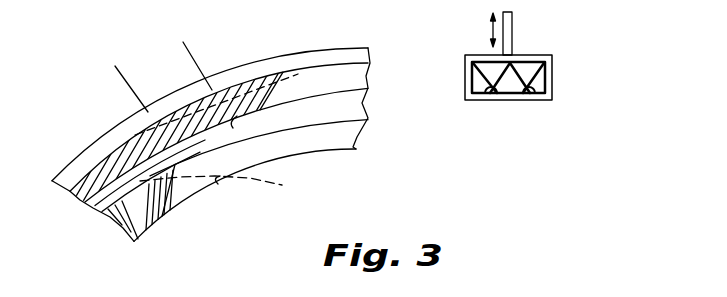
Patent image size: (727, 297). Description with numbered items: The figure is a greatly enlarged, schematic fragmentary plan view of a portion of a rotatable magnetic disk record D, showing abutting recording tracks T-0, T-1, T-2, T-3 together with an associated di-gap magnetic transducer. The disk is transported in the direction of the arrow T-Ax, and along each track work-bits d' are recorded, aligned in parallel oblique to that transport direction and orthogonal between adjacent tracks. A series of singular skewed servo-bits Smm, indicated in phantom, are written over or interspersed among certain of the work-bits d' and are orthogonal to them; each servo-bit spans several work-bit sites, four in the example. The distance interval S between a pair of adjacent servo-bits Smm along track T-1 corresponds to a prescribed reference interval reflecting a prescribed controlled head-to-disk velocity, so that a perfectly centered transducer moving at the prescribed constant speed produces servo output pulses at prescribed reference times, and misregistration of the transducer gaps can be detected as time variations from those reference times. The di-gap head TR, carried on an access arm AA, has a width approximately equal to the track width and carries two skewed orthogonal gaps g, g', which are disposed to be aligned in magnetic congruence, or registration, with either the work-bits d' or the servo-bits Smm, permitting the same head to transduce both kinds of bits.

The tread surface layer T-0 is at (372, 49).
The recording track T-1 is at (367, 80).
The recording track T-2 is at (366, 115).
The recording track T-3 is at (356, 143).
The magnetic disk record D is at (265, 56).
The servo-bit interval S is at (191, 44).
The work-bits d' is at (216, 118).
The skewed servo-bits Smm is at (233, 186).
The transport direction arrow T-Ax is at (240, 204).
The di-gap head TR is at (555, 78).
The access arm AA is at (513, 43).
The transducer gap g is at (491, 109).
The transducer gap g' is at (540, 108).